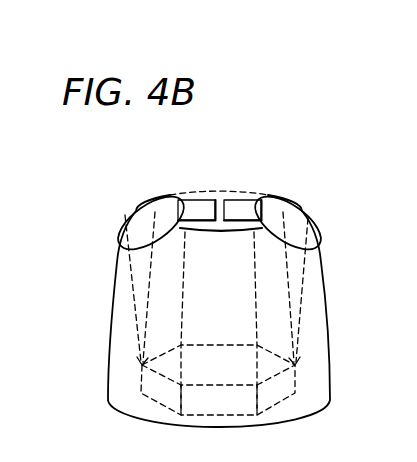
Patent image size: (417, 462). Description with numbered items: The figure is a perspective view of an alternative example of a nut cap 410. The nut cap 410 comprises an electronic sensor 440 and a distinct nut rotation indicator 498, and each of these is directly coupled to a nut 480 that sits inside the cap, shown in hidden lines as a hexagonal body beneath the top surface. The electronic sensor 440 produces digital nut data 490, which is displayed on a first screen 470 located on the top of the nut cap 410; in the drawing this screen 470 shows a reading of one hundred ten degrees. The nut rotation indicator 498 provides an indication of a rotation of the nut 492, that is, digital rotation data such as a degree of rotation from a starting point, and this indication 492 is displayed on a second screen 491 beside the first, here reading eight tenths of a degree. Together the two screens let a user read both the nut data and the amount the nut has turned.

The nut cap 410 is at (110, 331).
The electronic sensor 440 is at (120, 246).
The screen 470 is at (200, 200).
The nut 480 is at (138, 376).
The digital nut data 490 is at (181, 199).
The screen 491 is at (243, 200).
The indication of a rotation of a nut 492 is at (258, 212).
The nut rotation indicator 498 is at (320, 244).